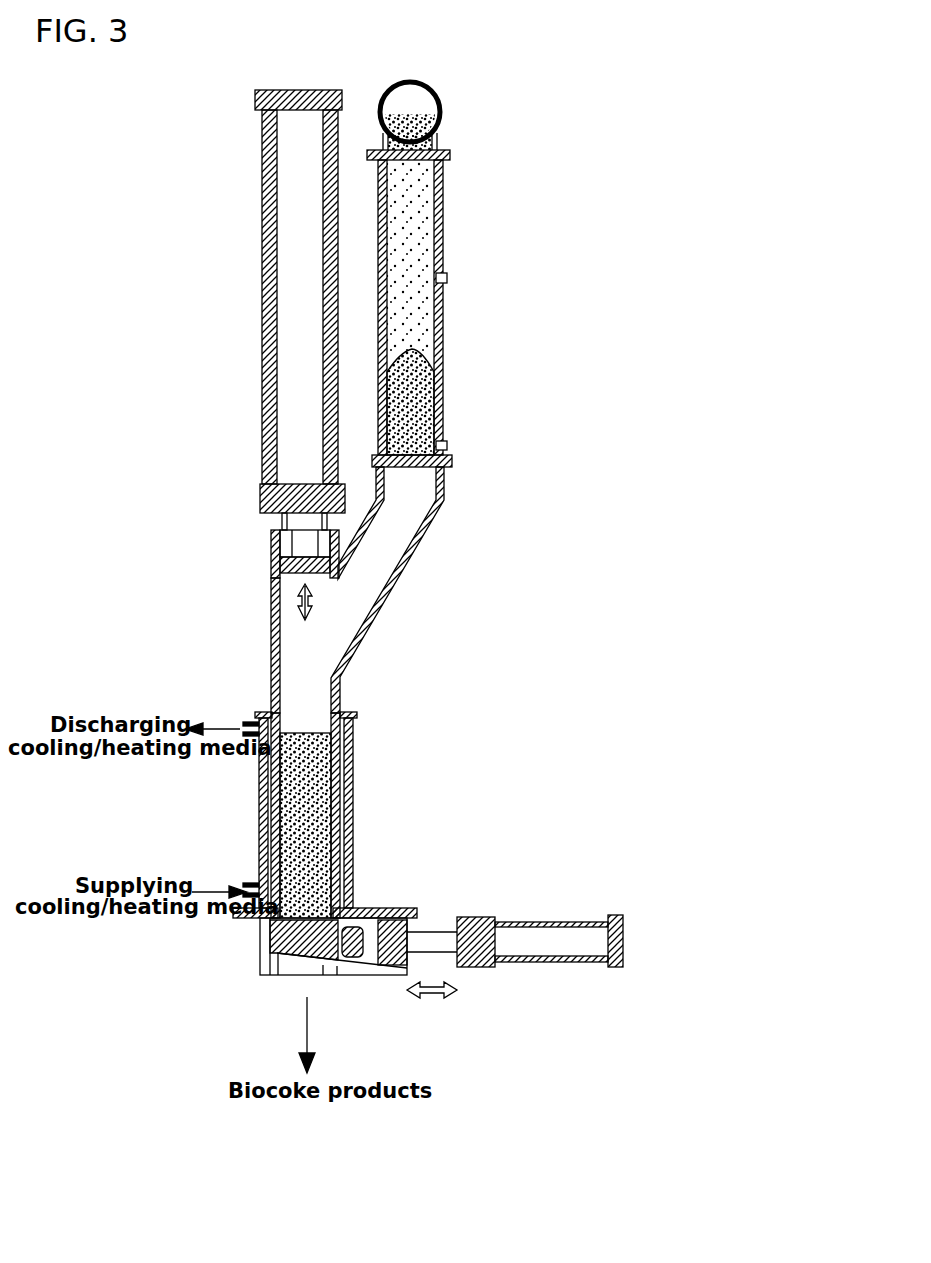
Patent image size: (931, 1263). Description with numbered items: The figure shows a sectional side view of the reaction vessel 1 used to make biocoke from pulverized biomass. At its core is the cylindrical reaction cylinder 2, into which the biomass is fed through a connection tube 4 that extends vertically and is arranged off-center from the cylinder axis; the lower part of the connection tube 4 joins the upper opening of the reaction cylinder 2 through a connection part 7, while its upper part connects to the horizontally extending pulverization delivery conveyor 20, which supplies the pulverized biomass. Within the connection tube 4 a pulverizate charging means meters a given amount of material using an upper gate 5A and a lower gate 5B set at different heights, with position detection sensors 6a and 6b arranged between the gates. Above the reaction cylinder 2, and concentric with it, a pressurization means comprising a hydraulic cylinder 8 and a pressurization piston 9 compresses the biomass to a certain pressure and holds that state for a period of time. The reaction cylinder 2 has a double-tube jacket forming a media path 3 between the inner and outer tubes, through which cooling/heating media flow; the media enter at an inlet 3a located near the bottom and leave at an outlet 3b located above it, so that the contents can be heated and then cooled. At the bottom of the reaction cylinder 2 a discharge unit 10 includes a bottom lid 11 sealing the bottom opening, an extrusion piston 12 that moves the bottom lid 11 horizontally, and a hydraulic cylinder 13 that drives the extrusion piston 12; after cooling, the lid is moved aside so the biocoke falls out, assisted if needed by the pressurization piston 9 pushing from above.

The reaction vessel 1 is at (513, 335).
The reaction cylinder 2 is at (343, 752).
The media path 3 is at (259, 782).
The inlet for cooling/heating media 3a is at (256, 883).
The outlet for cooling/heating media 3b is at (254, 718).
The connection tube 4 is at (443, 230).
The upper gate 5A is at (450, 155).
The lower gate 5B is at (452, 461).
The position detection sensor 6a is at (447, 277).
The position detection sensor 6b is at (447, 446).
The connection part 7 is at (378, 596).
The hydraulic cylinder 8 is at (262, 298).
The pressurization piston 9 is at (270, 562).
The discharge unit 10 is at (263, 968).
The bottom lid 11 is at (323, 973).
The extrusion piston 12 is at (538, 962).
The hydraulic cylinder 13 is at (353, 973).
The pulverization delivery conveyor 20 is at (443, 97).